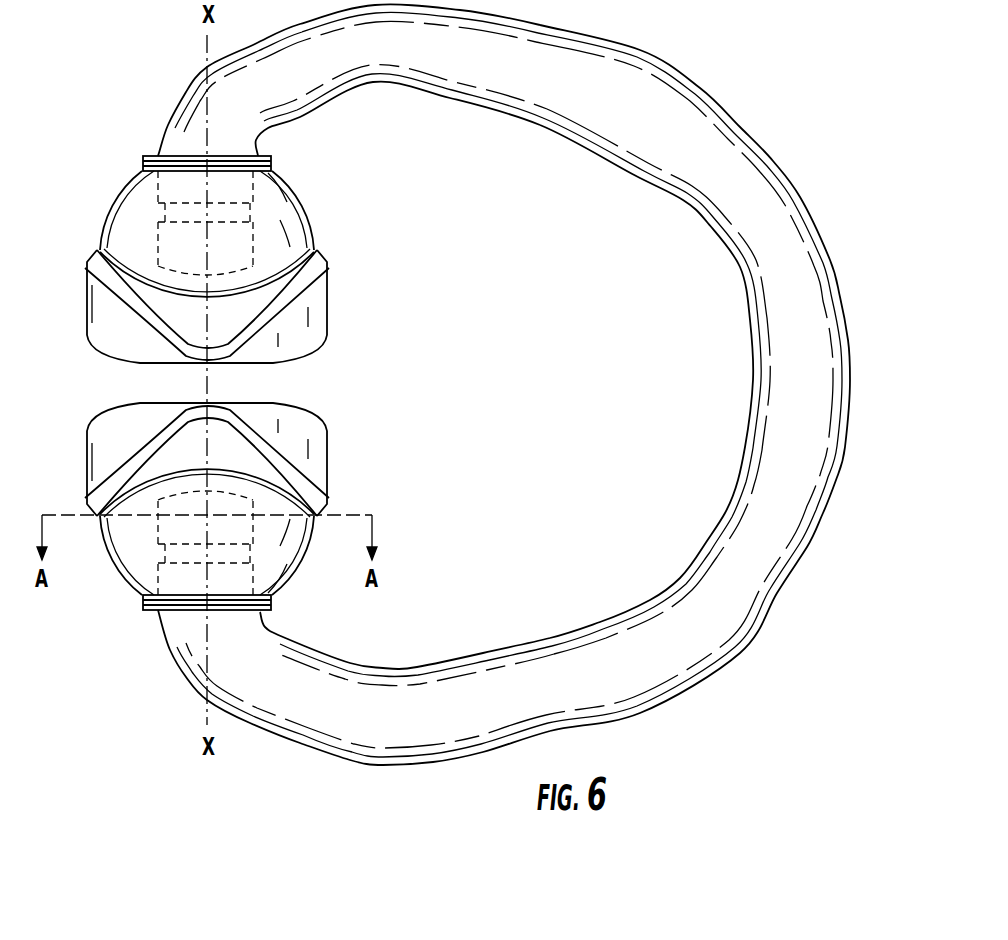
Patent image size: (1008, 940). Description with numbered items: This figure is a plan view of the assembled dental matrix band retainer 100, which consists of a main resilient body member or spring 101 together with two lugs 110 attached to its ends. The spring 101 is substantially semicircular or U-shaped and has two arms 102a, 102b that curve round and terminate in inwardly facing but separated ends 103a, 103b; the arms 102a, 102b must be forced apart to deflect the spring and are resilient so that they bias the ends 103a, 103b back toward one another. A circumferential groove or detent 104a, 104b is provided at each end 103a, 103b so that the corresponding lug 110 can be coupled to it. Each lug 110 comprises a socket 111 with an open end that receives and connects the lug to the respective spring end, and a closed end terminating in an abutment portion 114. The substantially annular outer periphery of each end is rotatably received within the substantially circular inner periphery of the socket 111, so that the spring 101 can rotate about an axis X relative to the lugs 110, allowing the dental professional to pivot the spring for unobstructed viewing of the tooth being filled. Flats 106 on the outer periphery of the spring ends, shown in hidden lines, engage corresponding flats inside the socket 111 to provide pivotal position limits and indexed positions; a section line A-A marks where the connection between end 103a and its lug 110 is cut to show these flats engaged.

The retainer 100 is at (790, 128).
The spring 101 is at (822, 280).
The first arm 102a is at (497, 662).
The second arm 102b is at (498, 107).
The first end 103a is at (163, 581).
The second end 103b is at (160, 185).
The first detent 104a is at (167, 550).
The second detent 104b is at (235, 212).
The spring end flat 106 is at (240, 248).
The lug 110 is at (296, 226).
The socket 111 is at (282, 258).
The abutment portion 114 is at (280, 287).